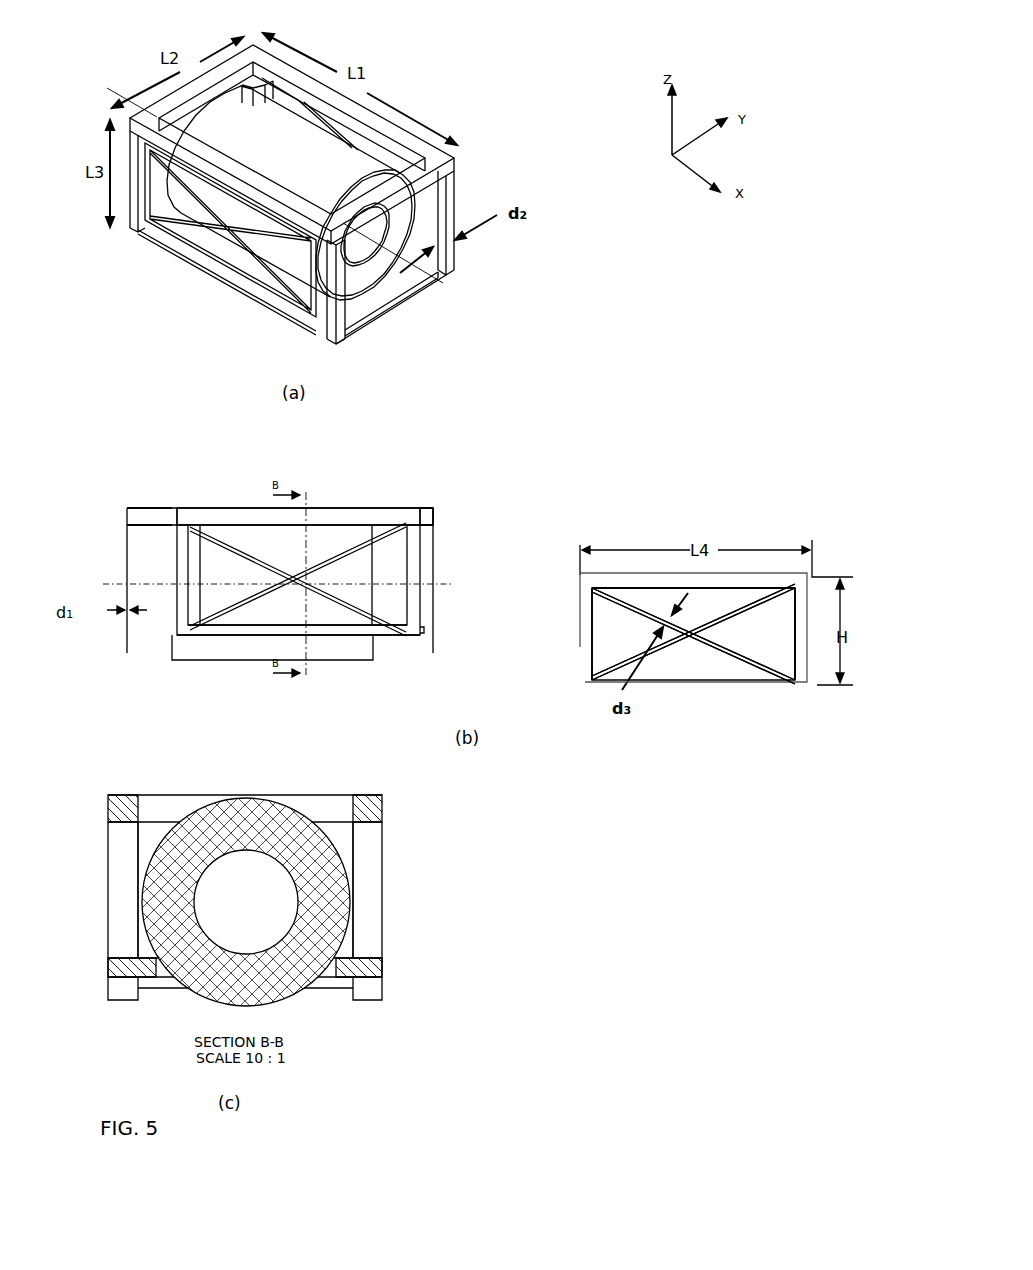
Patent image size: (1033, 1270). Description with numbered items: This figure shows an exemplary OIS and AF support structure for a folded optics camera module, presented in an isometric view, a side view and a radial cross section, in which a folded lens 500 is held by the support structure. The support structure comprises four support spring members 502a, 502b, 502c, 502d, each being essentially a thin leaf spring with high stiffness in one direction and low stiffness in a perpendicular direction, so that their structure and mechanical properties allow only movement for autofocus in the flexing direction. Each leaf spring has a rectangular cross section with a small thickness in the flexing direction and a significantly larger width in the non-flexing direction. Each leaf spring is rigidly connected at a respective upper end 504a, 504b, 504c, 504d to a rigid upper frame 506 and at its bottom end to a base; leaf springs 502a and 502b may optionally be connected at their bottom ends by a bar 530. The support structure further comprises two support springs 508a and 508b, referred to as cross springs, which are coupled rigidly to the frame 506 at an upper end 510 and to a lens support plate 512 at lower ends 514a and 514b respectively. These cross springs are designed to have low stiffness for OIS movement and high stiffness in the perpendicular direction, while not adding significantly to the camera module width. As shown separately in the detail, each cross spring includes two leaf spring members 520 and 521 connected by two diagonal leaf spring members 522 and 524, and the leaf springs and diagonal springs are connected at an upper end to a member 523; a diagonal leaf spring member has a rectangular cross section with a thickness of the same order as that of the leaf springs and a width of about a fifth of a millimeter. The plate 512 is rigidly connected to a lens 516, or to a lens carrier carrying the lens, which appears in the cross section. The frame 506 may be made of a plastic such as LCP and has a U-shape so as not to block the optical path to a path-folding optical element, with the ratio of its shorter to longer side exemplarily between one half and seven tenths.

The folded lens 500 is at (336, 116).
The support spring member 502a is at (137, 230).
The support spring member 502b is at (268, 85).
The support spring member 502c is at (440, 263).
The support spring member 502d is at (333, 330).
The upper end 504a is at (440, 520).
The upper end 504b is at (479, 504).
The upper end 504c is at (127, 518).
The upper end 504d is at (109, 500).
The rigid upper frame 506 is at (420, 147).
The support spring 508a is at (210, 253).
The support spring 508b is at (353, 133).
The upper end 510 is at (223, 508).
The lens support plate 512 is at (327, 300).
The lower end 514a is at (287, 303).
The lower end 514b is at (427, 227).
The lens 516 is at (240, 812).
The leaf spring member 520 is at (597, 652).
The leaf spring member 521 is at (807, 662).
The diagonal leaf spring member 522 is at (652, 660).
The member 523 is at (640, 583).
The diagonal leaf spring member 524 is at (750, 663).
The bar 530 is at (330, 985).